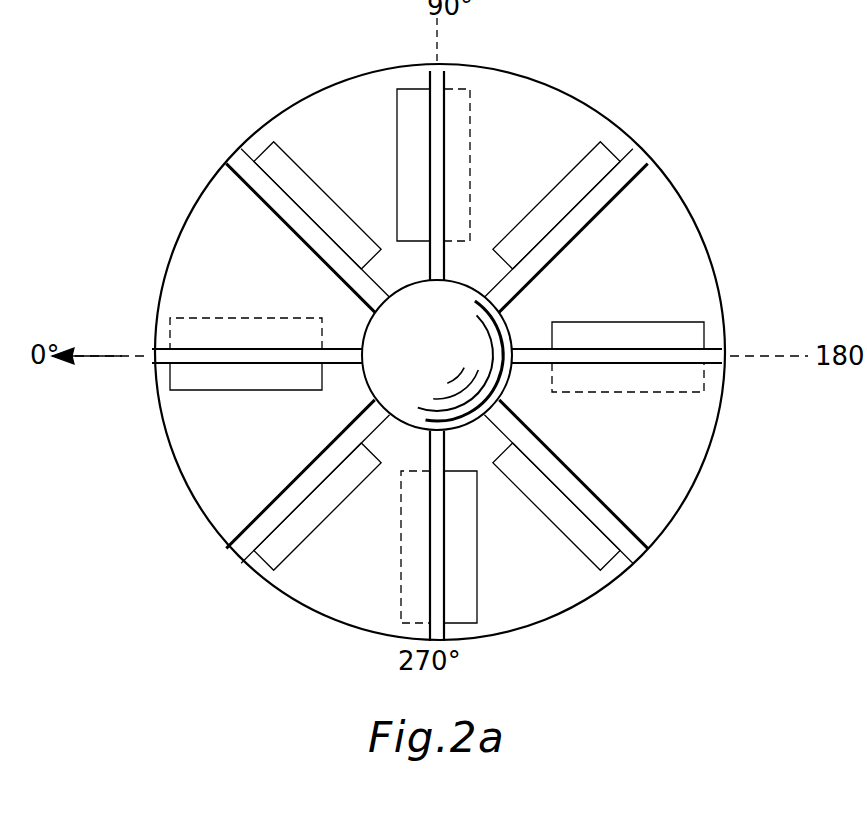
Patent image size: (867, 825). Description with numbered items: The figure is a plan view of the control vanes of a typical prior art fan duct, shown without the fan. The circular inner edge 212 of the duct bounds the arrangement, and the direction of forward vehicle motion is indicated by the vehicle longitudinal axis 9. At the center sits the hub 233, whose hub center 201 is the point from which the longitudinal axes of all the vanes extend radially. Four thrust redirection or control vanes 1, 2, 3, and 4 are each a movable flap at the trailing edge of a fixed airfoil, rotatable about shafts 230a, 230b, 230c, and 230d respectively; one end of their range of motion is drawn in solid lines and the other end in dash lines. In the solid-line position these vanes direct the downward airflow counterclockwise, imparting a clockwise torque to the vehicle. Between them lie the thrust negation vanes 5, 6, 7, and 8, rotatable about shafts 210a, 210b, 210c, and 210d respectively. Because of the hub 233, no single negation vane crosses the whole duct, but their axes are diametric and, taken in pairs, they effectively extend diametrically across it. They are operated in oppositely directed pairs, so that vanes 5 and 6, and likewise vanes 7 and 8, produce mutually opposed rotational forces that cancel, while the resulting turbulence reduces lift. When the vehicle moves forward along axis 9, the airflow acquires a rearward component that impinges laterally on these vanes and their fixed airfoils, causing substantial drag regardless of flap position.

The thrust redirection vane 1 is at (217, 318).
The thrust redirection vane 2 is at (396, 215).
The thrust redirection vane 3 is at (642, 322).
The thrust redirection vane 4 is at (476, 588).
The thrust negation vane 5 is at (296, 150).
The thrust negation vane 6 is at (529, 210).
The thrust negation vane 7 is at (544, 514).
The thrust negation vane 8 is at (334, 514).
The vehicle longitudinal axis 9 is at (87, 337).
The hub center 201 is at (440, 353).
The shaft 210a is at (280, 230).
The shaft 210b is at (590, 216).
The shaft 210c is at (590, 490).
The shaft 210d is at (288, 488).
The inner edge of duct 212 is at (724, 420).
The shaft 230a is at (166, 366).
The shaft 230b is at (421, 74).
The shaft 230c is at (724, 350).
The shaft 230d is at (448, 640).
The hub 233 is at (514, 316).